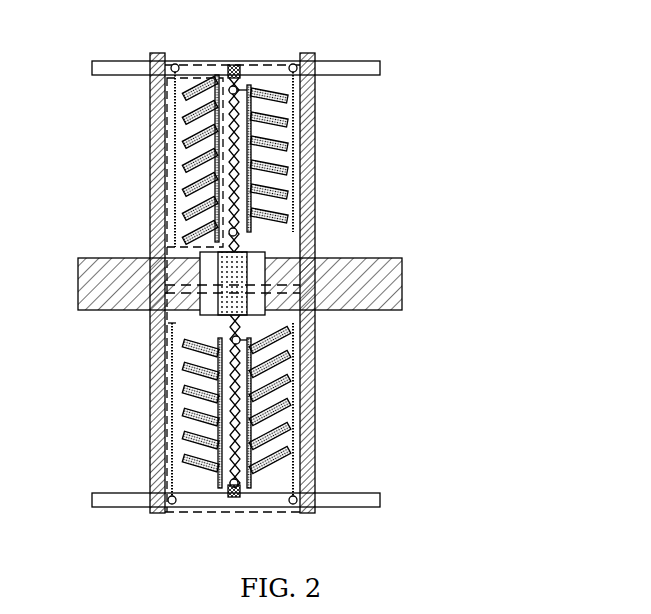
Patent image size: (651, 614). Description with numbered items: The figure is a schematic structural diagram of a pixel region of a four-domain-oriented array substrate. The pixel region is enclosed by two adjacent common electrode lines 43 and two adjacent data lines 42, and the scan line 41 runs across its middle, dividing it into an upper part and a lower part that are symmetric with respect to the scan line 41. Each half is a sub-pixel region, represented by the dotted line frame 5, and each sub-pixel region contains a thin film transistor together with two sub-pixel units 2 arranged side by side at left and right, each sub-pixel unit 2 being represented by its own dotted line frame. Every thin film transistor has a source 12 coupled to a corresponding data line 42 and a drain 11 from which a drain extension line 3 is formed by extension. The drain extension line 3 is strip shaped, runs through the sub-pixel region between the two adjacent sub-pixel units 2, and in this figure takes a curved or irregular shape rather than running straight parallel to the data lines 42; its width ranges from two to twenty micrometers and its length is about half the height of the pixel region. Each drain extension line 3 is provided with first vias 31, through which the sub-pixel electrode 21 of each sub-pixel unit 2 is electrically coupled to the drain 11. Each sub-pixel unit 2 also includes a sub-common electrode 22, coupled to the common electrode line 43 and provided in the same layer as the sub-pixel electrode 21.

The sub-pixel unit 2 is at (185, 78).
The drain extension line 3 is at (233, 66).
The dotted line frame 5 is at (312, 140).
The drain 11 is at (225, 255).
The source 12 is at (207, 270).
The sub-pixel electrode 21 is at (185, 170).
The sub-common electrode 22 is at (183, 113).
The first via 31 is at (236, 88).
The scan line 41 is at (402, 277).
The data line 42 is at (152, 55).
The common electrode line 43 is at (365, 68).